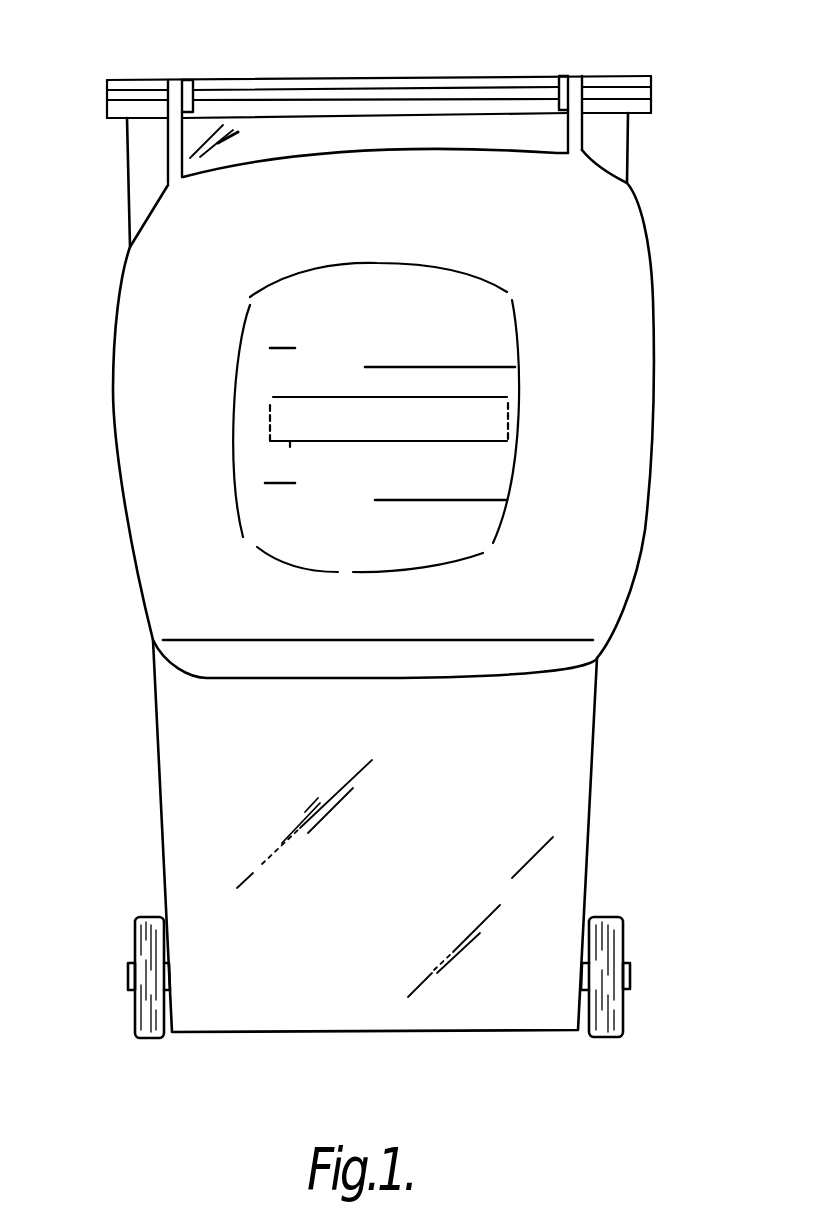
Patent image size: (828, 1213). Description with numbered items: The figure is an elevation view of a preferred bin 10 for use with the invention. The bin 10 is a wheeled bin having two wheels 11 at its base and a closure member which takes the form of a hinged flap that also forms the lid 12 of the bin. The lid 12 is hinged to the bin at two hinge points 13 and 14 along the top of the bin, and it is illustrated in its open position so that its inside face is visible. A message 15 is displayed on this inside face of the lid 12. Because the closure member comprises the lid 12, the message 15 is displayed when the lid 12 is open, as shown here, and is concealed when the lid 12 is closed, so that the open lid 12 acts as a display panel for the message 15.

The bin 10 is at (383, 566).
The wheels 11 is at (152, 1038).
The lid 12 is at (347, 345).
The hinge 13 is at (176, 80).
The hinge 14 is at (575, 76).
The message 15 is at (163, 490).